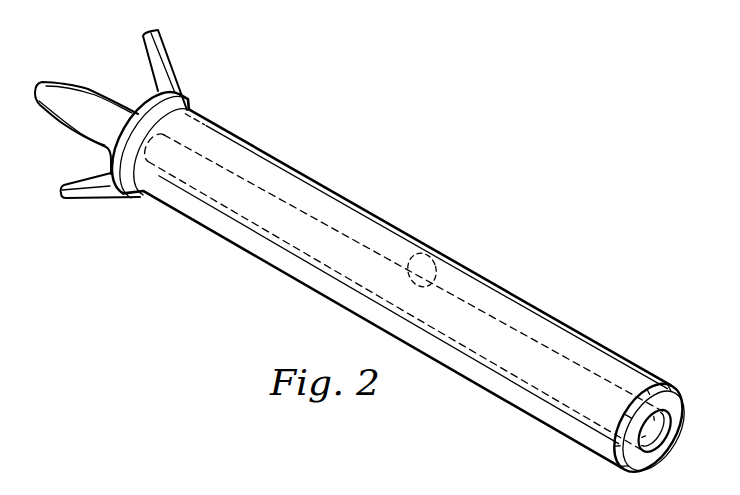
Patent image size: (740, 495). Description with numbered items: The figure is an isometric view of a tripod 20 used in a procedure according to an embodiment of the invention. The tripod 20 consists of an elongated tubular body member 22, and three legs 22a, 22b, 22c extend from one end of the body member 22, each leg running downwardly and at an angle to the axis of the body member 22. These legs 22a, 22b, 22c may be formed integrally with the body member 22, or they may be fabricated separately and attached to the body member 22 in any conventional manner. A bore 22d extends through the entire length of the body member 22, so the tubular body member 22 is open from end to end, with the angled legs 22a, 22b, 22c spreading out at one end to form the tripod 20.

The tripod 20 is at (369, 257).
The elongated tubular body member 22 is at (265, 272).
The leg 22a is at (88, 203).
The leg 22b is at (64, 81).
The leg 22c is at (169, 56).
The bore 22d is at (435, 257).